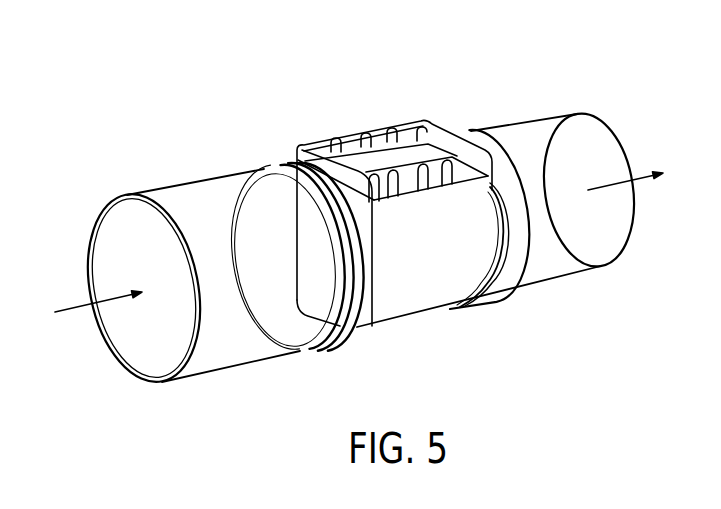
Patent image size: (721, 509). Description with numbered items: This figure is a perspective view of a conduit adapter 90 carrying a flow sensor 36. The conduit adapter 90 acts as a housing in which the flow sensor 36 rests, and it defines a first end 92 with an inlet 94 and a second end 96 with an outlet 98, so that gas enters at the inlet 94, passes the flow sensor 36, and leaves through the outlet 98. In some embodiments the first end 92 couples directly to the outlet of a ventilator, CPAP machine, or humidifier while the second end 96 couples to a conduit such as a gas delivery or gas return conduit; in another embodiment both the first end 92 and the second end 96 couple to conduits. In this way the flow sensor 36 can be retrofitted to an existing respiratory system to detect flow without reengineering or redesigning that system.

The flow sensor 36 is at (439, 363).
The conduit adapter 90 is at (232, 345).
The first end 92 is at (162, 386).
The inlet 94 is at (116, 258).
The second end 96 is at (575, 112).
The outlet 98 is at (593, 160).